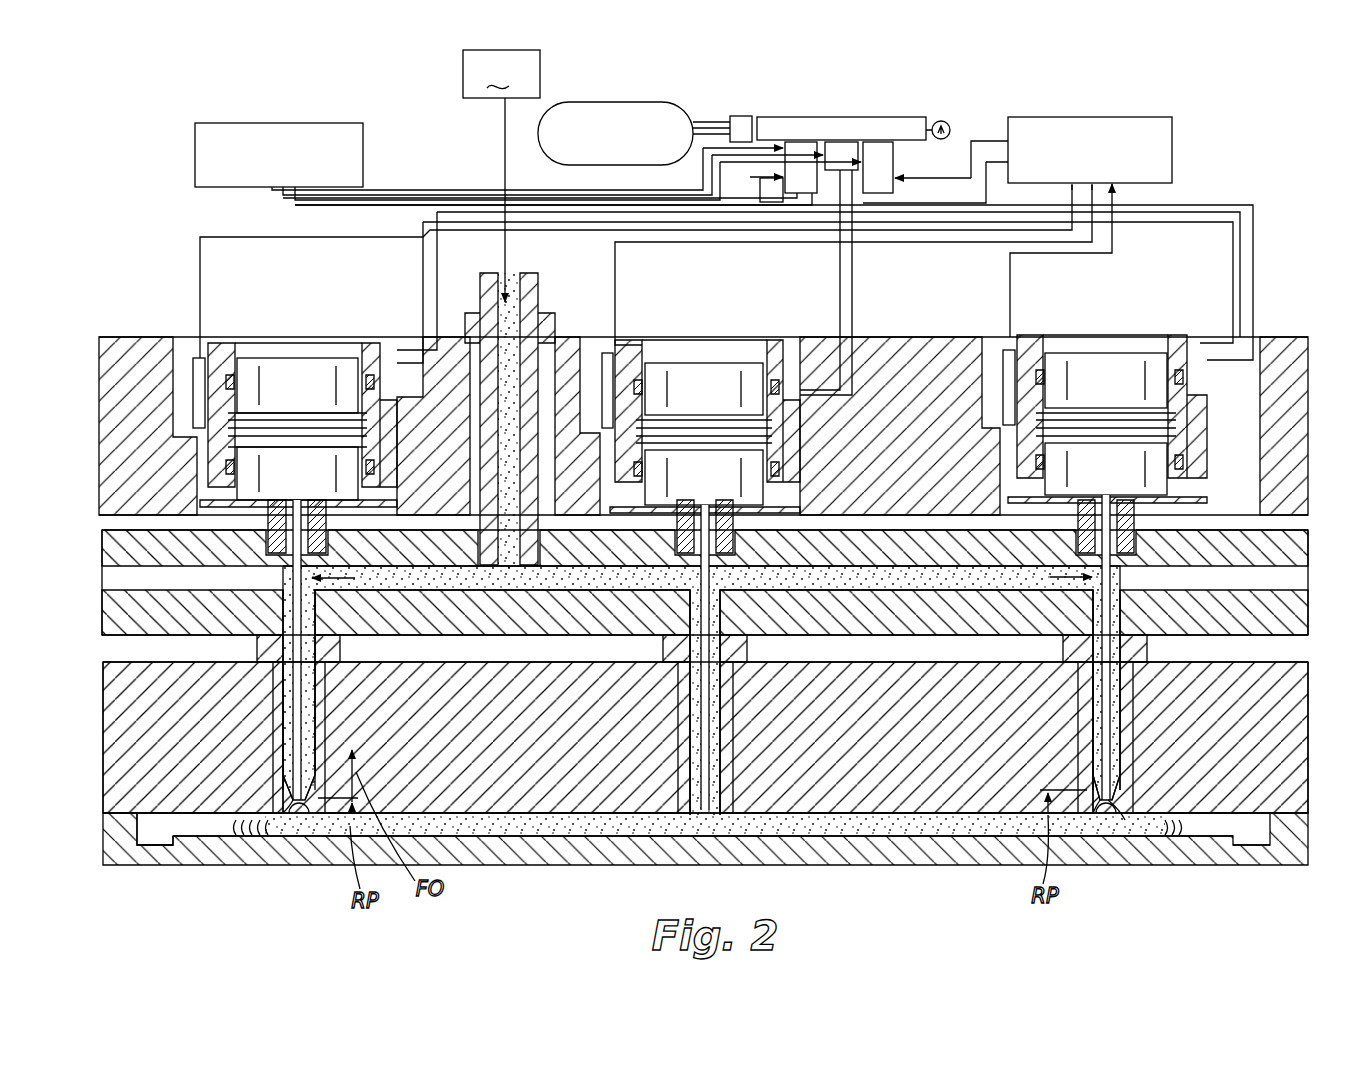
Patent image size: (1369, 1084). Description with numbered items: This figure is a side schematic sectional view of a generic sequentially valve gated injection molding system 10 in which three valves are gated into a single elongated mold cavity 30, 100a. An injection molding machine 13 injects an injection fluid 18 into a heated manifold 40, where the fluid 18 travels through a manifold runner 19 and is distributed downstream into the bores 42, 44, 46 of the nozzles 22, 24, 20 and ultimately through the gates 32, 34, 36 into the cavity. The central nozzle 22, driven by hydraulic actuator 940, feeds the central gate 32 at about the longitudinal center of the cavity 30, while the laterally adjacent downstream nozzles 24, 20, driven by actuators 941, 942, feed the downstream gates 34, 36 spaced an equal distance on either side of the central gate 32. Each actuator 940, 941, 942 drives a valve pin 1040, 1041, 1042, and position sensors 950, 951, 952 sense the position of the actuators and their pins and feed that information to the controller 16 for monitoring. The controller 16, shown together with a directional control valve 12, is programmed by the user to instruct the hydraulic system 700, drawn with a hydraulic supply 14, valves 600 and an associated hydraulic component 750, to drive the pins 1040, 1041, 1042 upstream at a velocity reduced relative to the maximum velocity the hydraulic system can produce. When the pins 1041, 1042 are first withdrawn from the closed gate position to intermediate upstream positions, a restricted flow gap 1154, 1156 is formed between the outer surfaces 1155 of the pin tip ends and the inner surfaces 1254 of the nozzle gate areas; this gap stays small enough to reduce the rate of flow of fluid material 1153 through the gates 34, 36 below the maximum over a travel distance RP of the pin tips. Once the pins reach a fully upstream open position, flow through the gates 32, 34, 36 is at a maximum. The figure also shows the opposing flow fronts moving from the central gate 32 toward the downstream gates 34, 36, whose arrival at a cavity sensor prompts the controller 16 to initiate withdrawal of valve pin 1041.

The system 10 is at (1274, 136).
The directional control 12 is at (292, 122).
The injection molding machine 13 is at (512, 176).
The hydraulic supply 14 is at (622, 102).
The controller 16 is at (1093, 117).
The injection fluid 18 is at (480, 350).
The manifold runner 19 is at (787, 578).
The nozzle 20 is at (278, 728).
The nozzle 22 is at (735, 760).
The nozzle 24 is at (1133, 714).
The mold cavity 30 is at (163, 827).
The central gate 32 is at (712, 826).
The gate 34 is at (1120, 828).
The gate 36 is at (284, 832).
The heated manifold 40 is at (110, 534).
The bore 42 is at (713, 678).
The bore 44 is at (1120, 690).
The bore 46 is at (288, 673).
The cavity 100a is at (873, 823).
The valves 600 is at (875, 170).
The hydraulic system 700 is at (832, 121).
The hydraulic cylinder 750 is at (804, 113).
The hydraulic actuator 940 is at (633, 335).
The hydraulic actuator 941 is at (1029, 333).
The hydraulic actuator 942 is at (226, 335).
The position sensor 950 is at (605, 352).
The position sensor 951 is at (1006, 350).
The position sensor 952 is at (199, 356).
The valve pin 1040 is at (700, 603).
The valve pin 1041 is at (1107, 612).
The valve pin 1042 is at (290, 614).
The fluid material 1153 is at (318, 822).
The gap 1154 is at (1117, 782).
The outer surfaces 1155 is at (222, 836).
The gap 1156 is at (272, 836).
The inner surfaces 1254 is at (163, 853).